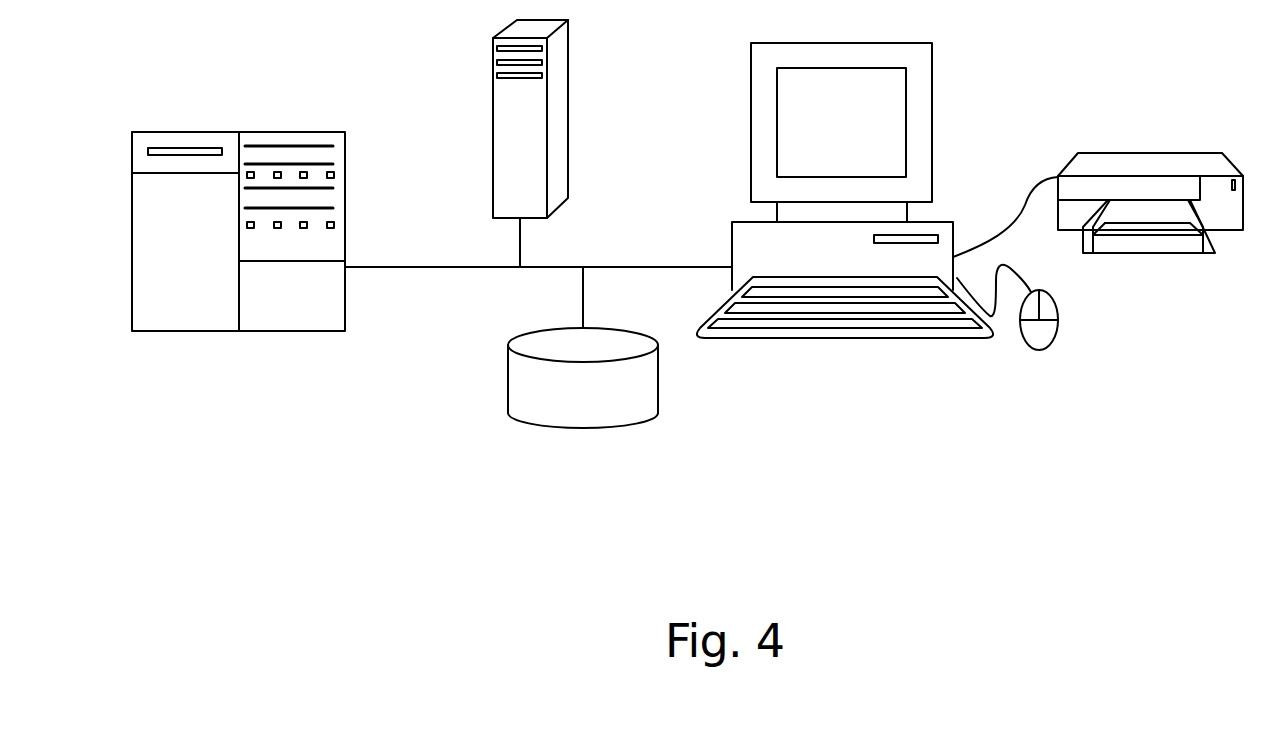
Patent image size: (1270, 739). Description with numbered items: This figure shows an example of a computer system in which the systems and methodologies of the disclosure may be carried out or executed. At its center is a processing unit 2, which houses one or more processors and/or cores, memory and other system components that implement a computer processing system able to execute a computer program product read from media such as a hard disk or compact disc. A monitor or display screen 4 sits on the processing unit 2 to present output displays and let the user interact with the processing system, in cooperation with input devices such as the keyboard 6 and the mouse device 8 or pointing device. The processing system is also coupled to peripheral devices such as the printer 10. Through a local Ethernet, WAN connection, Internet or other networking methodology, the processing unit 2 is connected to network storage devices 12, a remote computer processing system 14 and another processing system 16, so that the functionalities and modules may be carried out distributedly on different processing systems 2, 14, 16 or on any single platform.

The processing unit 2 is at (735, 249).
The monitor or display screen 4 is at (933, 118).
The keyboard 6 is at (900, 338).
The mouse device 8 is at (1058, 335).
The printer 10 is at (1150, 152).
The network storage devices 12 is at (600, 427).
The remote computer processing system 14 is at (570, 108).
The processing system 16 is at (282, 132).